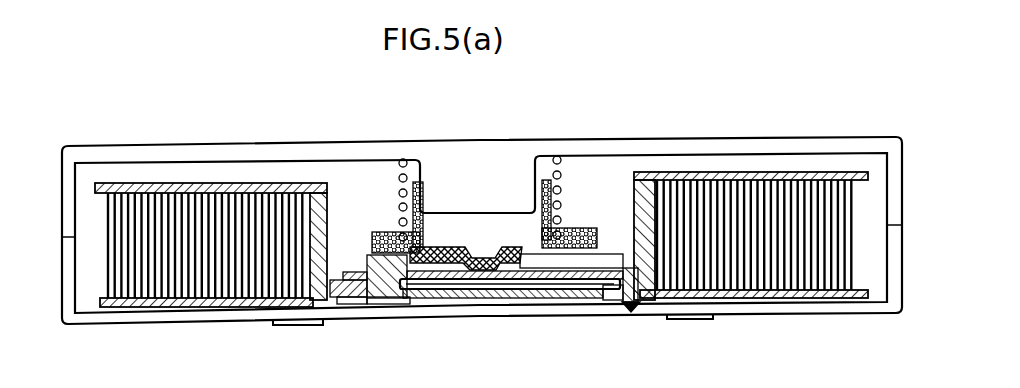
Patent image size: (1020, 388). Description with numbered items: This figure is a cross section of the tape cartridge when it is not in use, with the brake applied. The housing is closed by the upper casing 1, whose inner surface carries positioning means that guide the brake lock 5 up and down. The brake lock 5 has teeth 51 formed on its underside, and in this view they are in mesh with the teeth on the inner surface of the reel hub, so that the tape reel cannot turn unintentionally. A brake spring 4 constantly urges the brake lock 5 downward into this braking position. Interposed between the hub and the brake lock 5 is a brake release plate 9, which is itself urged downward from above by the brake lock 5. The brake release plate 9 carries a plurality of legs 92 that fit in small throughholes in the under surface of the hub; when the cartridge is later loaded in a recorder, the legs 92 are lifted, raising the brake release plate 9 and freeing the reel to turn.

The upper casing 1 is at (198, 148).
The brake spring 4 is at (398, 178).
The brake lock 5 is at (512, 246).
The teeth 51 is at (410, 298).
The brake release plate 9 is at (533, 295).
The legs 92 is at (628, 316).